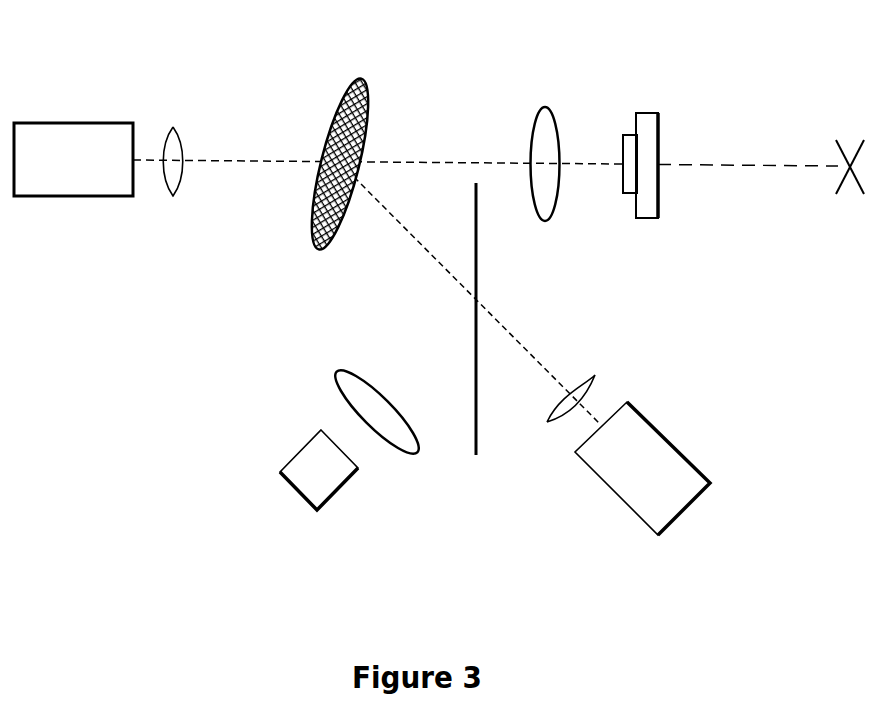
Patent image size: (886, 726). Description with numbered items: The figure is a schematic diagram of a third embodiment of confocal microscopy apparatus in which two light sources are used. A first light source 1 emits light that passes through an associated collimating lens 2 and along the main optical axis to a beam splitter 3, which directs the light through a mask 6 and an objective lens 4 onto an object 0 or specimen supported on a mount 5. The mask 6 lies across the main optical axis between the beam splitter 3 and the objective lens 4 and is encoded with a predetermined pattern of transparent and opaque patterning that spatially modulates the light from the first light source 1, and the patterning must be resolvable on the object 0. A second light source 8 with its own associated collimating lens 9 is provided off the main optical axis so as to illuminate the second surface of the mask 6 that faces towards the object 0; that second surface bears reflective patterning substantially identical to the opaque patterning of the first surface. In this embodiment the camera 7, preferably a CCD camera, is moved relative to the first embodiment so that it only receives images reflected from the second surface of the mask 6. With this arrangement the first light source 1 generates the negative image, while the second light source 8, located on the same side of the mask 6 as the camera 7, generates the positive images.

The object 0 is at (631, 135).
The first light source 1 is at (72, 122).
The collimating lens 2 is at (173, 125).
The beam splitter 3 is at (476, 440).
The objective lens 4 is at (543, 140).
The mount 5 is at (658, 142).
The mask 6 is at (363, 78).
The camera 7 is at (300, 450).
The second light source 8 is at (662, 473).
The collimating lens 9 is at (588, 376).